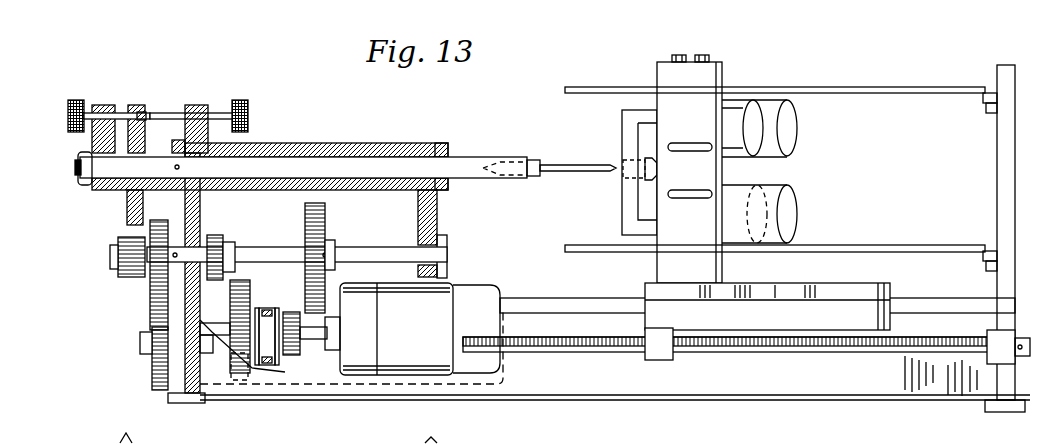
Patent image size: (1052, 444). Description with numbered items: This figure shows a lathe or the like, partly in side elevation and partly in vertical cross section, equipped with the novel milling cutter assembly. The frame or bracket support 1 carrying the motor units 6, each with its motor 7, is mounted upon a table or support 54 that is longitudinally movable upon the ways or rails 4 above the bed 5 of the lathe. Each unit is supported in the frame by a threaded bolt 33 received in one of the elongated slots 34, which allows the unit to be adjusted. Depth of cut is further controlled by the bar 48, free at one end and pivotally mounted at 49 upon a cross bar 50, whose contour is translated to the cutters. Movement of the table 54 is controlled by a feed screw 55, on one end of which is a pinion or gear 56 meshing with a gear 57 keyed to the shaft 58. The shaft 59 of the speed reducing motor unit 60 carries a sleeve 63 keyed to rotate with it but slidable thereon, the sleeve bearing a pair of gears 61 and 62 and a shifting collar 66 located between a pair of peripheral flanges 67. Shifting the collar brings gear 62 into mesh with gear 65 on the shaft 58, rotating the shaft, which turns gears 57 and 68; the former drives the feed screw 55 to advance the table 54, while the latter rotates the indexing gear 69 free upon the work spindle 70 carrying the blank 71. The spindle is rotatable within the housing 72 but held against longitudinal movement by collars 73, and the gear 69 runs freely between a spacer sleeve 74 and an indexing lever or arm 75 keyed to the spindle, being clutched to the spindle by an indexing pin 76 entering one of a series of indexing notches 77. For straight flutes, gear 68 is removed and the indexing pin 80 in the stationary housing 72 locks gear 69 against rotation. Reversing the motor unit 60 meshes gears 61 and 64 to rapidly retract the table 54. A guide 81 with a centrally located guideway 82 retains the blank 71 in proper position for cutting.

The frame or bracket support 1 is at (738, 72).
The ways or rails 4 is at (588, 300).
The bed 5 is at (697, 387).
The units 6 is at (762, 185).
The motor 7 is at (792, 128).
The threaded bolt 33 is at (703, 55).
The elongated slots 34 is at (688, 190).
The bar 48 is at (881, 91).
The pivot 49 is at (984, 86).
The cross bar 50 is at (983, 108).
The table or support 54 is at (865, 312).
The feed screw 55 is at (212, 343).
The pinion or gear 56 is at (152, 360).
The pinion or gear 57 is at (152, 282).
The shaft 58 is at (265, 253).
The motor shaft 59 is at (313, 340).
The speed reducing motor unit 60 is at (488, 283).
The gear or pinion 61 is at (248, 295).
The gear or pinion 62 is at (268, 312).
The sleeve 63 is at (284, 352).
The gear or pinion 64 is at (214, 237).
The gear or pinion 65 is at (326, 219).
The shifting collar 66 is at (276, 357).
The peripheral flanges 67 is at (254, 365).
The gear 68 is at (123, 246).
The gear or pinion 69 is at (140, 105).
The work spindle 70 is at (378, 158).
The blank 71 is at (557, 165).
The housing 72 is at (317, 135).
The collars 73 is at (180, 142).
The spacer sleeve 74 is at (155, 188).
The indexing lever or arm 75 is at (98, 105).
The indexing pin 76 is at (120, 113).
The indexing notches or openings 77 is at (147, 115).
The indexing pin 80 is at (220, 112).
The guide 81 is at (625, 203).
The guideway 82 is at (623, 176).